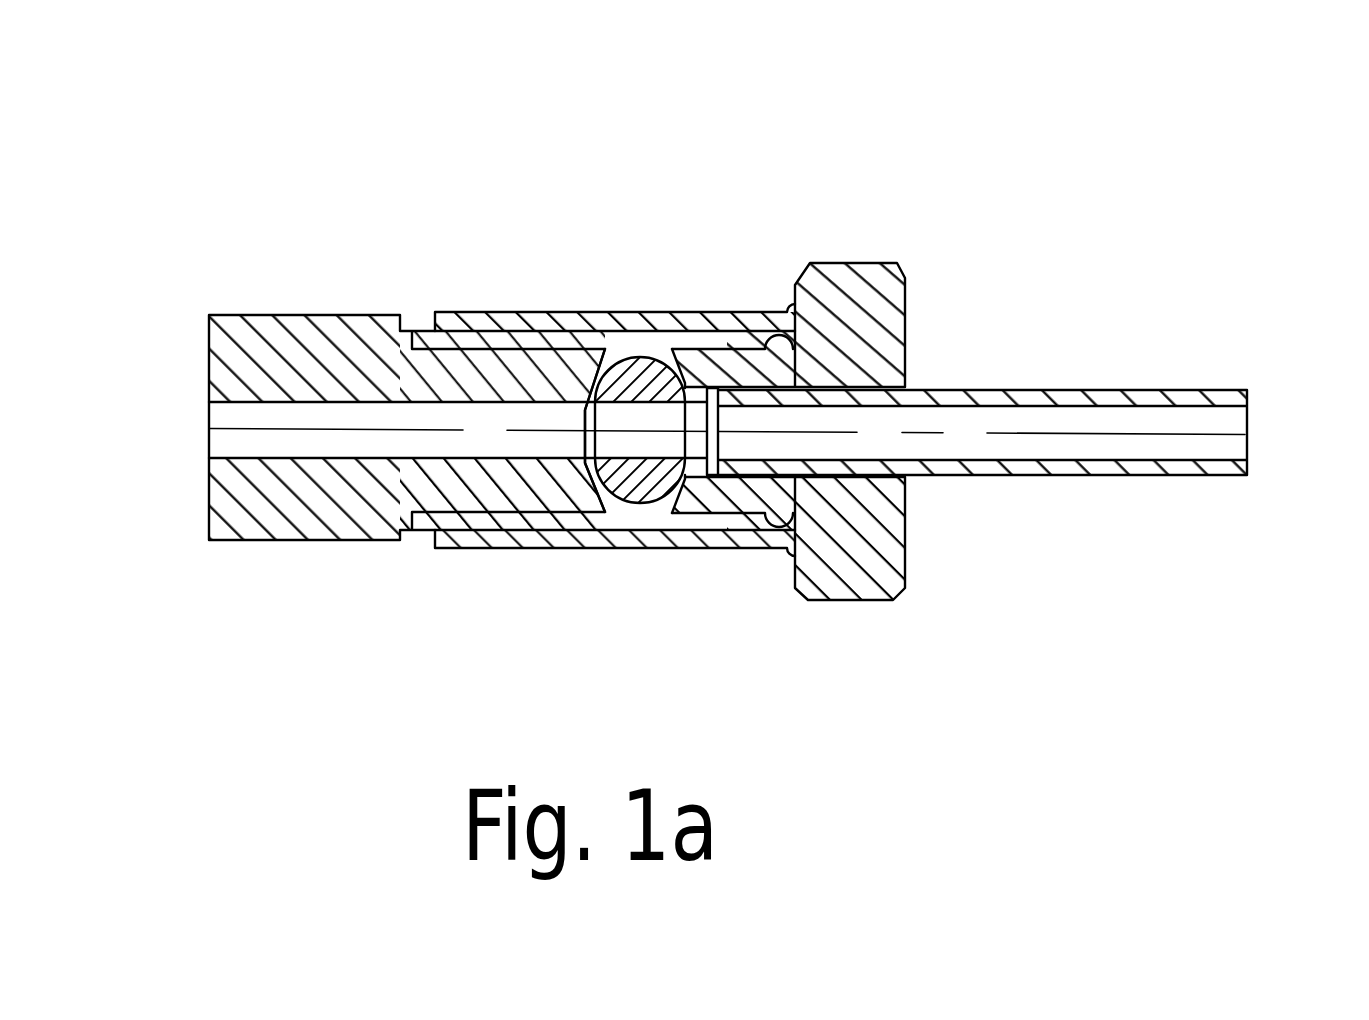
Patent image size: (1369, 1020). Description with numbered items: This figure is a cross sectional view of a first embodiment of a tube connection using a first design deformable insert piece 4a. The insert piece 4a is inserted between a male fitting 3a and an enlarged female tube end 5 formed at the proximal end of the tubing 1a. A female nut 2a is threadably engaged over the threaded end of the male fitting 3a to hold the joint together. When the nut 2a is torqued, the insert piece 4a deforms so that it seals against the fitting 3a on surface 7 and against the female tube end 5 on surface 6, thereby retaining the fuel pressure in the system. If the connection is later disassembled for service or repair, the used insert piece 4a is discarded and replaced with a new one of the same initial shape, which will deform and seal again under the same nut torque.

The tubing 1a is at (1073, 391).
The female nut 2a is at (838, 247).
The male fitting 3a is at (295, 307).
The insert piece 4a is at (634, 514).
The female tube end 5 is at (786, 527).
The surface 6 is at (682, 353).
The surface 7 is at (590, 355).